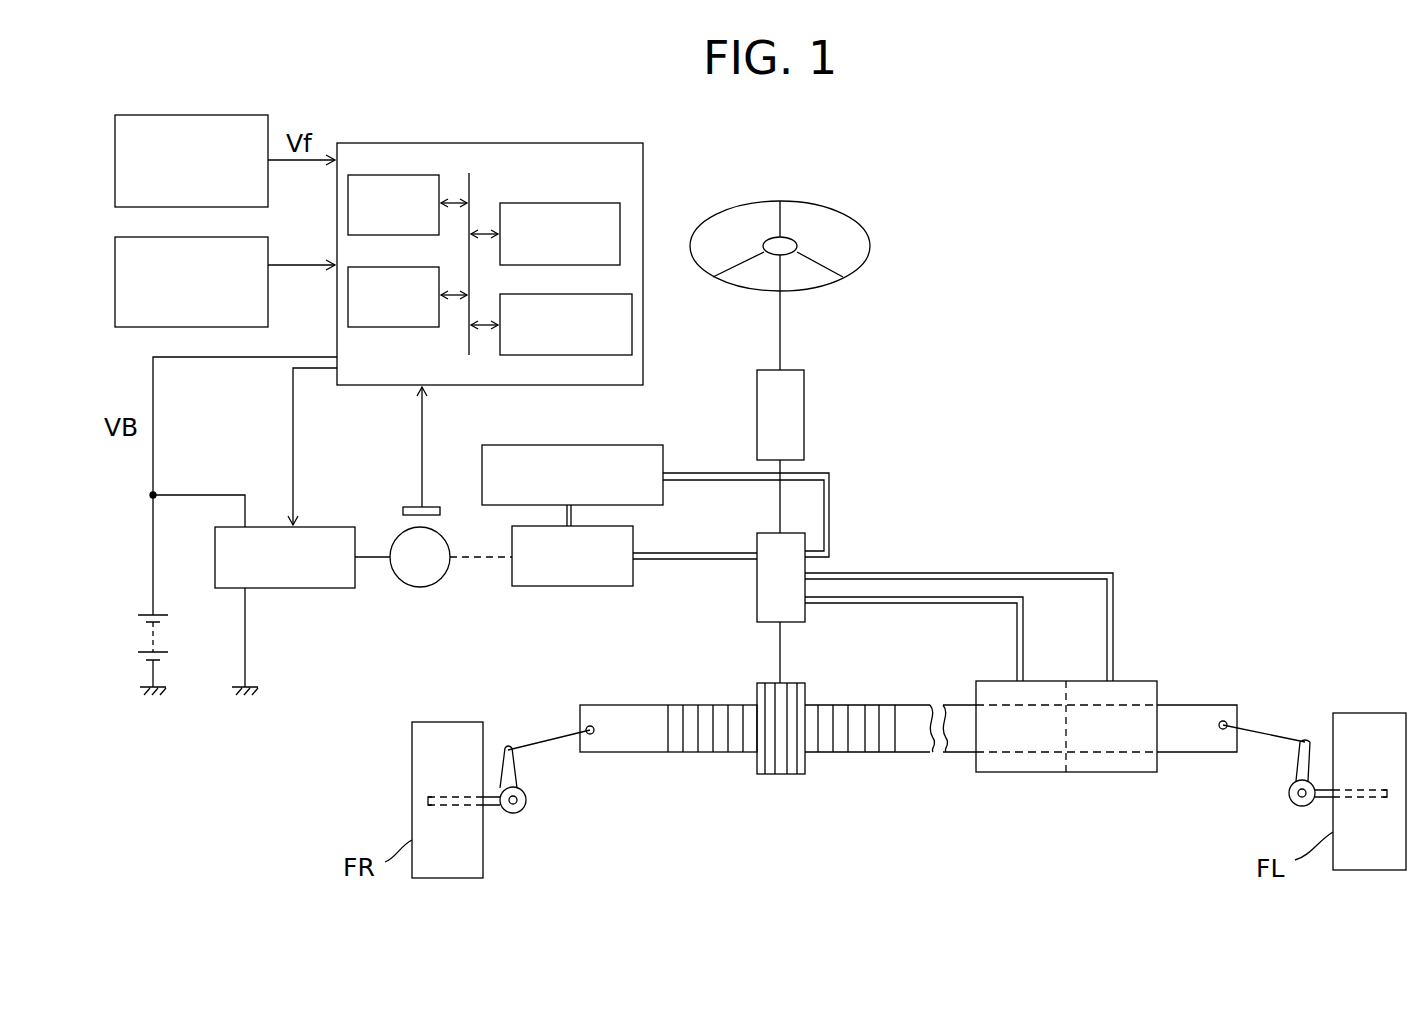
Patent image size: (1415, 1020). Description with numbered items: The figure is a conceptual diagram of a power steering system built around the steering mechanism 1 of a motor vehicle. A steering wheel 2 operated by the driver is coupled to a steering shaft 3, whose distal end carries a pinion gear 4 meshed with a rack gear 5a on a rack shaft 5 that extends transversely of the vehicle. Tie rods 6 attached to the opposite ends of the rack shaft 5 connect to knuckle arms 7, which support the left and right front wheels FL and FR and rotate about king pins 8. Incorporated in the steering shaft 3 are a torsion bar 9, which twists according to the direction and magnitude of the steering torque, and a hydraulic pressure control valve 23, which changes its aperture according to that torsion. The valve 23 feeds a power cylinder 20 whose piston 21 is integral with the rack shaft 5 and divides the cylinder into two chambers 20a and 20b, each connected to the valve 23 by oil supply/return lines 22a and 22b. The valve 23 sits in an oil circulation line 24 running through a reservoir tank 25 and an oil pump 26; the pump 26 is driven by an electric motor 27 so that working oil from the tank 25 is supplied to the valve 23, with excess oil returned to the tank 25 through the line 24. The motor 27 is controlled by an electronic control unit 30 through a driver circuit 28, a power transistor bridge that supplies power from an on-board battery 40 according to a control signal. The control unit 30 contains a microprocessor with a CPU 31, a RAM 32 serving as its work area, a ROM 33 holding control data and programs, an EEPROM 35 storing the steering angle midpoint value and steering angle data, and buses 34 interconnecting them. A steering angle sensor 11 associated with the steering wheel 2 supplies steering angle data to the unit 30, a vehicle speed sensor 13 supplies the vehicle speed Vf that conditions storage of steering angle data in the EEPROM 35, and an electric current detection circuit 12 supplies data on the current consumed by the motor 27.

The steering mechanism 1 is at (872, 376).
The steering wheel 2 is at (806, 201).
The steering shaft 3 is at (782, 352).
The pinion gear 4 is at (782, 774).
The rack shaft 5 is at (918, 752).
The rack gear 5a is at (722, 745).
The tie rods 6 is at (548, 740).
The knuckle arms 7 is at (530, 800).
The king pins 8 is at (515, 814).
The torsion bar 9 is at (797, 398).
The steering angle sensor 11 is at (132, 327).
The electric current detection circuit 12 is at (410, 507).
The vehicle speed sensor 13 is at (180, 116).
The power cylinder 20 is at (1140, 681).
The cylinder chamber 20a is at (1008, 765).
The cylinder chamber 20b is at (1125, 765).
The piston 21 is at (1066, 765).
The oil supply/return line 22a is at (918, 605).
The oil supply/return line 22b is at (990, 573).
The hydraulic pressure control valve 23 is at (757, 592).
The oil circulation line 24 is at (829, 512).
The reservoir tank 25 is at (663, 460).
The oil pump 26 is at (570, 586).
The electric motor 27 is at (422, 587).
The driver circuit 28 is at (285, 588).
The electronic control unit 30 is at (392, 143).
The CPU 31 is at (408, 175).
The RAM 32 is at (388, 327).
The ROM 33 is at (572, 203).
The buses 34 is at (471, 187).
The EEPROM 35 is at (632, 325).
The on-board battery 40 is at (148, 612).